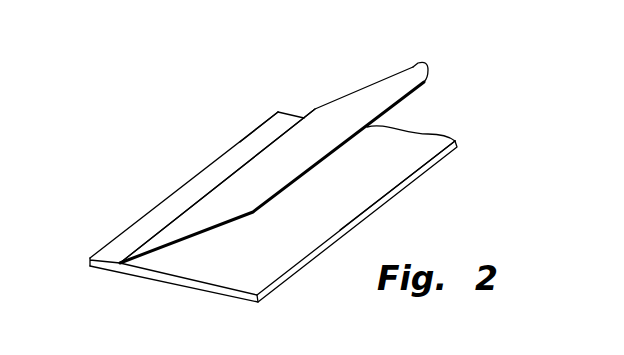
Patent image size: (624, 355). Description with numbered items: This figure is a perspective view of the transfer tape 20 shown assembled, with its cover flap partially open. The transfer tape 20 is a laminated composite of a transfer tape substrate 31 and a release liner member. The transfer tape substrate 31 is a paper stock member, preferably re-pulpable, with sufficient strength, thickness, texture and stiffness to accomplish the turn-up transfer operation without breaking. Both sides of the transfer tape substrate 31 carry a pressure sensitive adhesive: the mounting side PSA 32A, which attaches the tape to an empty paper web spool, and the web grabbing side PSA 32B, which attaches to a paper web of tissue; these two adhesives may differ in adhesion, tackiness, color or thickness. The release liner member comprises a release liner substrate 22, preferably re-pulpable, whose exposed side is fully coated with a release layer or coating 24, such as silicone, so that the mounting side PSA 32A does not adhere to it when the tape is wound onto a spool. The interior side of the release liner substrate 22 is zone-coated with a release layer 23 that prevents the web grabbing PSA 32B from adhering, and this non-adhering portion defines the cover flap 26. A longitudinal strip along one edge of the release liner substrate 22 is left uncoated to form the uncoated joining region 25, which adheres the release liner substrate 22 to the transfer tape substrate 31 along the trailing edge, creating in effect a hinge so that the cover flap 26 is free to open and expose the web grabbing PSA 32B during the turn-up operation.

The transfer tape 20 is at (160, 163).
The release liner substrate 22 is at (175, 240).
The zone-coated release layer 23 is at (438, 94).
The release layer or coating 24 is at (335, 117).
The uncoated joining region 25 is at (100, 267).
The cover flap 26 is at (399, 101).
The transfer tape substrate 31 is at (235, 297).
The mounting side PSA 32A is at (288, 304).
The web grabbing side PSA 32B is at (360, 184).